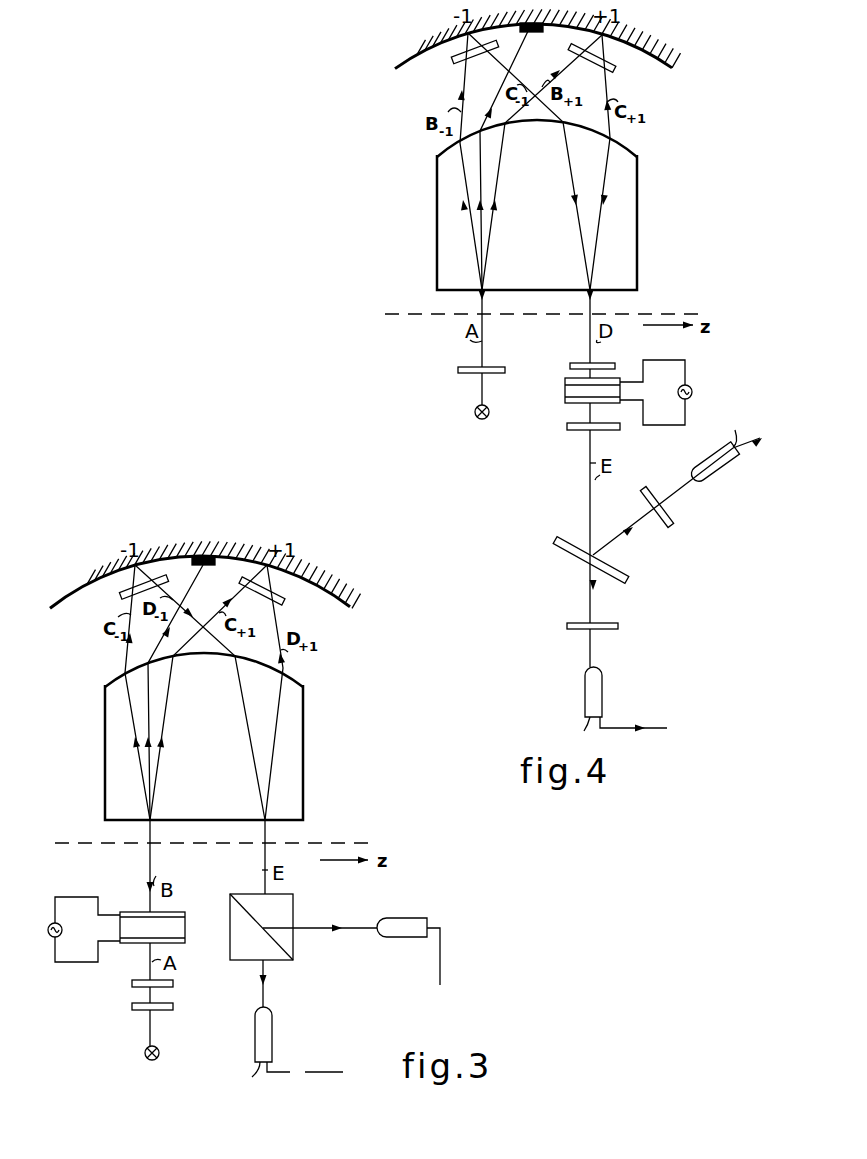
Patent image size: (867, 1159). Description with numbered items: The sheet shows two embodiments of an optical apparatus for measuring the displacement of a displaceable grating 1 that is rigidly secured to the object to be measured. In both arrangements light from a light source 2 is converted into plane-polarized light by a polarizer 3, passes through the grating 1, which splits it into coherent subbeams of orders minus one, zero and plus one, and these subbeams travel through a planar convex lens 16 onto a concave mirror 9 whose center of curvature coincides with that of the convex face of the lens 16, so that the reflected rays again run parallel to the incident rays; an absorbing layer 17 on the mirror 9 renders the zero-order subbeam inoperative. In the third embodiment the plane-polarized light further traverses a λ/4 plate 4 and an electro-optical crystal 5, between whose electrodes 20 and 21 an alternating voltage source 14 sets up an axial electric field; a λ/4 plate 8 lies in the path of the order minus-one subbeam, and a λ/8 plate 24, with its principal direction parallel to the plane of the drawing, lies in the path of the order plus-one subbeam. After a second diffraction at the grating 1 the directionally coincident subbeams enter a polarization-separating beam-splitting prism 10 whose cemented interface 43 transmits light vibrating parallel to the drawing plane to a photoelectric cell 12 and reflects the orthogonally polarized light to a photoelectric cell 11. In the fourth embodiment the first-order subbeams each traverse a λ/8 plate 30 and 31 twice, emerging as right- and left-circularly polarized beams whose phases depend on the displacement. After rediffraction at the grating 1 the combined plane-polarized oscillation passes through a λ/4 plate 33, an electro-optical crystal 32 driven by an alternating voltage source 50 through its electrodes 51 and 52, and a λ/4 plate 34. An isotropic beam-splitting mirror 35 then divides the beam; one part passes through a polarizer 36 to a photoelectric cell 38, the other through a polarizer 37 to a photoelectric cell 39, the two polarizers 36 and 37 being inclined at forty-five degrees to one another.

In FIG. 4, the displaceable grating 1 is at (395, 312).
In FIG. 3, the displaceable grating 1 is at (63, 843).
In FIG. 4, the light source 2 is at (475, 413).
In FIG. 3, the light source 2 is at (147, 1053).
In FIG. 4, the polarizer 3 is at (458, 373).
In FIG. 3, the polarizer 3 is at (132, 1006).
In FIG. 3, the λ/4 plate 4 is at (132, 983).
In FIG. 3, the electro-optical crystal 5 is at (169, 927).
In FIG. 3, the λ/4 plate 8 is at (122, 595).
In FIG. 4, the concave mirror 9 is at (405, 61).
In FIG. 3, the concave mirror 9 is at (65, 595).
In FIG. 3, the beam-splitting prism 10 is at (282, 927).
In FIG. 3, the photoelectric cell 11 is at (405, 917).
In FIG. 3, the photoelectric cell 12 is at (272, 1037).
In FIG. 3, the alternating voltage source 14 is at (48, 930).
In FIG. 4, the planar convex lens 16 is at (450, 222).
In FIG. 3, the planar convex lens 16 is at (118, 755).
In FIG. 4, the absorbing layer 17 is at (533, 32).
In FIG. 3, the absorbing layer 17 is at (208, 565).
In FIG. 3, the electrode 20 is at (178, 925).
In FIG. 3, the electrode 21 is at (185, 913).
In FIG. 3, the λ/8 plate 24 is at (283, 600).
In FIG. 4, the λ/8 plate 30 is at (452, 58).
In FIG. 4, the λ/8 plate 31 is at (614, 68).
In FIG. 4, the electro-optical crystal 32 is at (602, 388).
In FIG. 4, the λ/4 plate 33 is at (615, 365).
In FIG. 4, the λ/4 plate 34 is at (620, 427).
In FIG. 4, the isotropic beam-splitting mirror 35 is at (628, 570).
In FIG. 4, the polarizer 36 is at (675, 520).
In FIG. 4, the polarizer 37 is at (618, 623).
In FIG. 4, the photoelectric cell 38 is at (720, 472).
In FIG. 4, the photoelectric cell 39 is at (602, 697).
In FIG. 3, the interface 43 is at (283, 948).
In FIG. 4, the alternating voltage source 50 is at (692, 392).
In FIG. 4, the electrode 51 is at (565, 380).
In FIG. 4, the electrode 52 is at (565, 402).